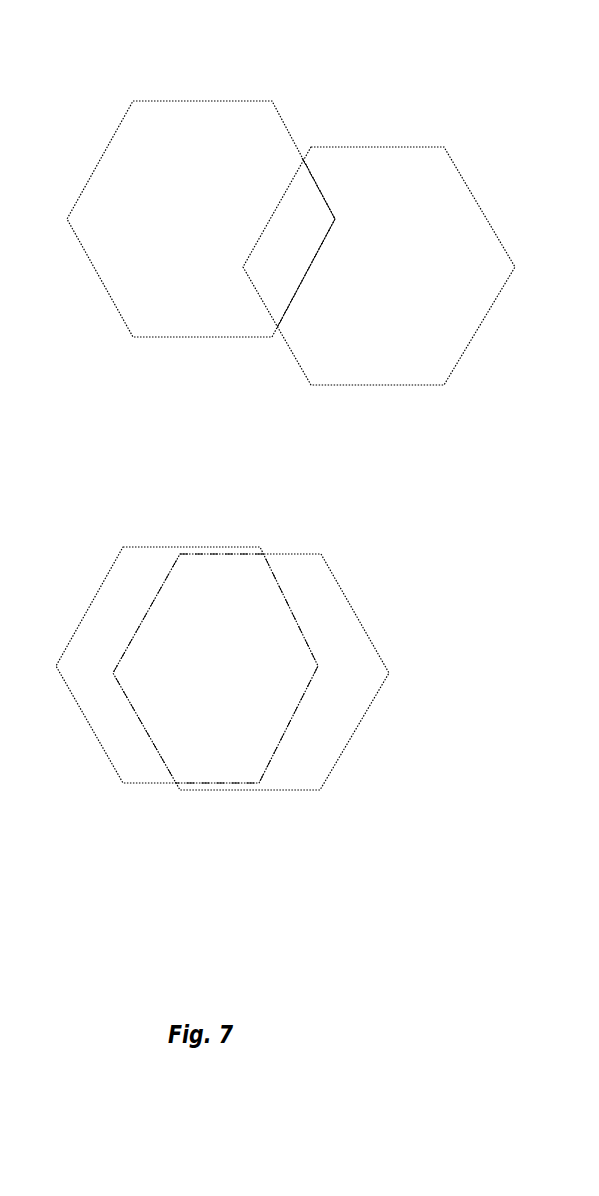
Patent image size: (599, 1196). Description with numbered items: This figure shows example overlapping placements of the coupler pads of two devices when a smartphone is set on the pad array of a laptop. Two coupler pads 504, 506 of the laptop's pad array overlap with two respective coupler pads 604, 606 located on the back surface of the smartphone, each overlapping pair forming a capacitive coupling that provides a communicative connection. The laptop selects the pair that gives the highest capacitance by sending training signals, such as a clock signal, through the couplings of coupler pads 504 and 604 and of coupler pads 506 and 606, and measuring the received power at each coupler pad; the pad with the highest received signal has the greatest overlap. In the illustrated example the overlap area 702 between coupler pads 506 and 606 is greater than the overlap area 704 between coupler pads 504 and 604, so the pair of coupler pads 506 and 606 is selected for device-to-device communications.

The coupler pad 504 is at (237, 157).
The coupler pad 604 is at (466, 218).
The overlap area 704 is at (290, 257).
The coupler pad 506 is at (88, 635).
The coupler pad 606 is at (361, 662).
The overlap area 702 is at (203, 702).